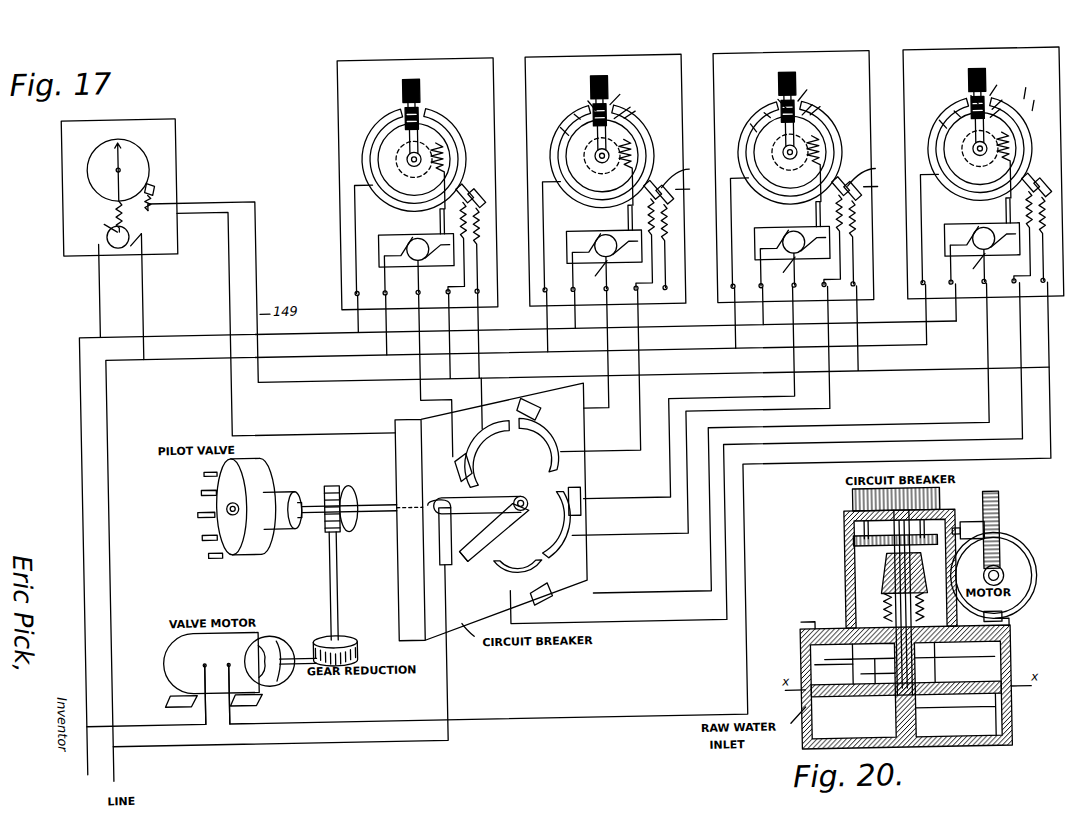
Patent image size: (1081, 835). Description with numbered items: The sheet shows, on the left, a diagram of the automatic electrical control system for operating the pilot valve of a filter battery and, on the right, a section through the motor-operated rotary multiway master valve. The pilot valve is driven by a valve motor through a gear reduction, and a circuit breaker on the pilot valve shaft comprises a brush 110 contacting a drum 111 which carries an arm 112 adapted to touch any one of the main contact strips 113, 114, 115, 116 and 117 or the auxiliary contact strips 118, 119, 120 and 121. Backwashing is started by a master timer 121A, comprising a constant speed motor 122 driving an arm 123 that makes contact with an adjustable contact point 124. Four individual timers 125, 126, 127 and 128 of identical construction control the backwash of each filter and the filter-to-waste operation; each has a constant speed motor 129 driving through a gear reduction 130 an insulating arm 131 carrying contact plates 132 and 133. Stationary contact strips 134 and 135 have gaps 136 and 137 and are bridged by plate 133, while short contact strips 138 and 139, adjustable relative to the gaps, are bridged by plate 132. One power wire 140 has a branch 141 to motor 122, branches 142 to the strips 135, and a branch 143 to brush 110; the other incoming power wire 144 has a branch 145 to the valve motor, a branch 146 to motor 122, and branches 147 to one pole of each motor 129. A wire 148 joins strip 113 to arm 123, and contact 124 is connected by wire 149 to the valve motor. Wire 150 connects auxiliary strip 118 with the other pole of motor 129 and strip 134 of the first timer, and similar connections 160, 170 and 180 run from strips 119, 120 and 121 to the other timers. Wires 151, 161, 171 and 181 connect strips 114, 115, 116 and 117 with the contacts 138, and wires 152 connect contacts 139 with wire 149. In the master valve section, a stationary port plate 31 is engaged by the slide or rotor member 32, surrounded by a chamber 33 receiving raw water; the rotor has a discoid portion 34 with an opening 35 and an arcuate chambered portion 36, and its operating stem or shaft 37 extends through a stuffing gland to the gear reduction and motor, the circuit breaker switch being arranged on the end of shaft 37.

In FIG. 17, the brush 110 is at (446, 564).
In FIG. 17, the drum 111 is at (480, 497).
In FIG. 17, the arm 112 is at (500, 520).
In FIG. 17, the main contact strip 113 is at (486, 555).
In FIG. 17, the main contact strip 114 is at (496, 448).
In FIG. 17, the main contact strip 115 is at (540, 446).
In FIG. 17, the main contact strip 116 is at (552, 548).
In FIG. 17, the main contact strip 117 is at (493, 581).
In FIG. 17, the auxiliary contact strip 118 is at (462, 455).
In FIG. 17, the auxiliary contact strip 119 is at (540, 408).
In FIG. 17, the auxiliary contact strip 120 is at (581, 497).
In FIG. 17, the auxiliary contact strip 121 is at (546, 590).
In FIG. 17, the master timer 121A is at (181, 128).
In FIG. 17, the constant speed motor 122 is at (108, 216).
In FIG. 17, the arm 123 is at (127, 139).
In FIG. 17, the adjustable contact point 124 is at (162, 181).
In FIG. 17, the individual timer 125 is at (430, 167).
In FIG. 17, the individual timer 126 is at (620, 165).
In FIG. 17, the individual timer 127 is at (807, 161).
In FIG. 17, the individual timer 128 is at (975, 158).
In FIG. 17, the constant speed motor 129 is at (418, 260).
In FIG. 17, the gear reduction 130 is at (450, 142).
In FIG. 17, the arm 131 is at (417, 97).
In FIG. 17, the contact plate 132 is at (425, 108).
In FIG. 17, the contact plate 133 is at (428, 122).
In FIG. 17, the stationary contact strip 134 is at (384, 130).
In FIG. 17, the stationary contact strip 135 is at (378, 143).
In FIG. 17, the gap 136 is at (402, 120).
In FIG. 17, the gap 137 is at (408, 112).
In FIG. 17, the short contact strip 138 is at (474, 192).
In FIG. 17, the short contact strip 139 is at (488, 199).
In FIG. 17, the wire 140 is at (194, 364).
In FIG. 17, the branch 141 is at (149, 276).
In FIG. 17, the branch 142 is at (357, 320).
In FIG. 17, the branch 143 is at (258, 743).
In FIG. 17, the incoming power wire 144 is at (195, 330).
In FIG. 17, the branch 145 is at (128, 718).
In FIG. 17, the branch 146 is at (100, 303).
In FIG. 17, the branch 147 is at (681, 319).
In FIG. 17, the wire 148 is at (330, 430).
In FIG. 17, the wire 149 is at (542, 714).
In FIG. 17, the wire 150 is at (410, 392).
In FIG. 17, the wire 151 is at (476, 409).
In FIG. 17, the wire 152 is at (484, 367).
In FIG. 17, the connection 160 is at (602, 357).
In FIG. 17, the wire 161 is at (638, 431).
In FIG. 17, the connection 170 is at (768, 399).
In FIG. 17, the wire 171 is at (685, 530).
In FIG. 17, the connection 180 is at (988, 402).
In FIG. 17, the wire 181 is at (1021, 402).
In FIG. 20, the stationary port plate 31 is at (958, 710).
In FIG. 20, the slide or rotor member 32 is at (864, 669).
In FIG. 20, the chamber 33 is at (859, 663).
In FIG. 20, the discoid portion 34 is at (834, 675).
In FIG. 20, the opening 35 is at (875, 678).
In FIG. 20, the arcuate chambered portion 36 is at (954, 663).
In FIG. 20, the operating stem or shaft 37 is at (884, 576).